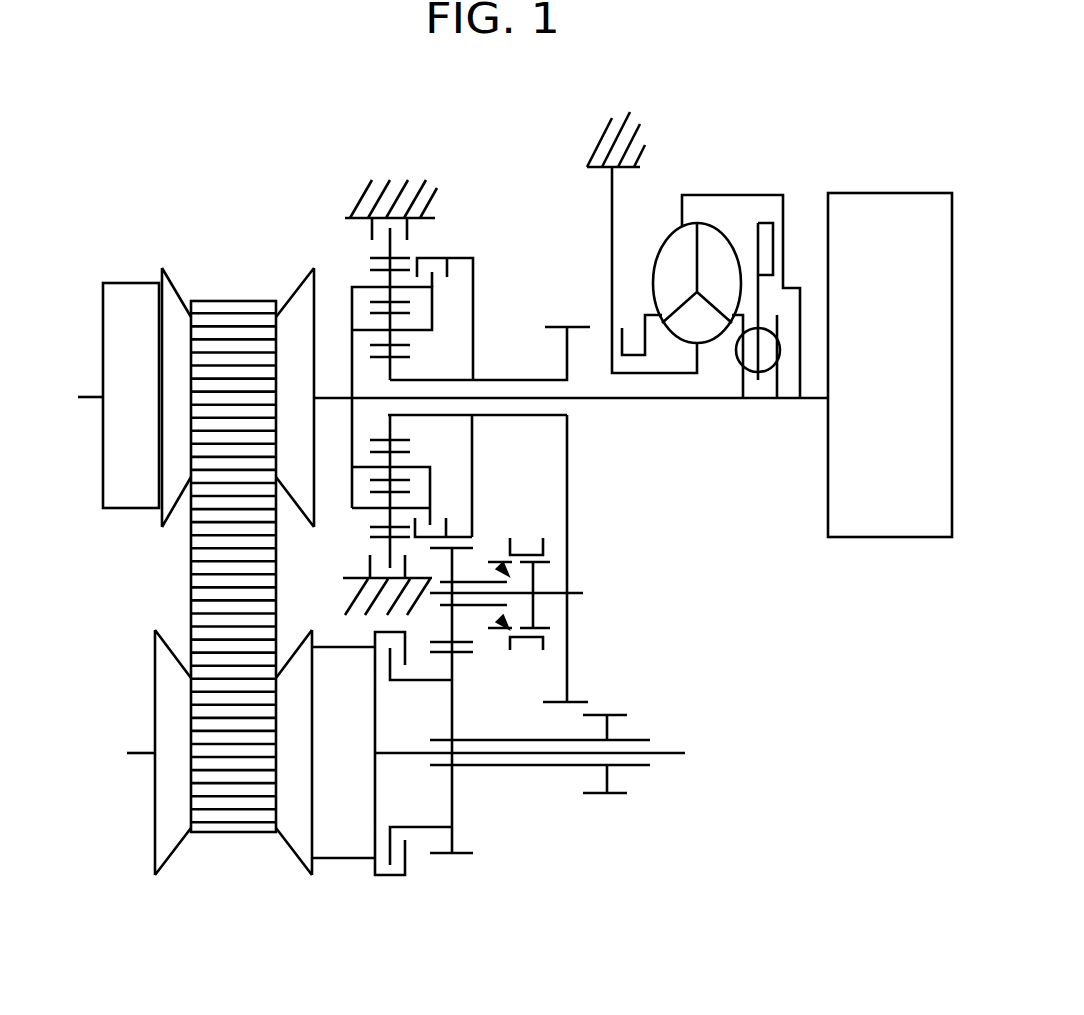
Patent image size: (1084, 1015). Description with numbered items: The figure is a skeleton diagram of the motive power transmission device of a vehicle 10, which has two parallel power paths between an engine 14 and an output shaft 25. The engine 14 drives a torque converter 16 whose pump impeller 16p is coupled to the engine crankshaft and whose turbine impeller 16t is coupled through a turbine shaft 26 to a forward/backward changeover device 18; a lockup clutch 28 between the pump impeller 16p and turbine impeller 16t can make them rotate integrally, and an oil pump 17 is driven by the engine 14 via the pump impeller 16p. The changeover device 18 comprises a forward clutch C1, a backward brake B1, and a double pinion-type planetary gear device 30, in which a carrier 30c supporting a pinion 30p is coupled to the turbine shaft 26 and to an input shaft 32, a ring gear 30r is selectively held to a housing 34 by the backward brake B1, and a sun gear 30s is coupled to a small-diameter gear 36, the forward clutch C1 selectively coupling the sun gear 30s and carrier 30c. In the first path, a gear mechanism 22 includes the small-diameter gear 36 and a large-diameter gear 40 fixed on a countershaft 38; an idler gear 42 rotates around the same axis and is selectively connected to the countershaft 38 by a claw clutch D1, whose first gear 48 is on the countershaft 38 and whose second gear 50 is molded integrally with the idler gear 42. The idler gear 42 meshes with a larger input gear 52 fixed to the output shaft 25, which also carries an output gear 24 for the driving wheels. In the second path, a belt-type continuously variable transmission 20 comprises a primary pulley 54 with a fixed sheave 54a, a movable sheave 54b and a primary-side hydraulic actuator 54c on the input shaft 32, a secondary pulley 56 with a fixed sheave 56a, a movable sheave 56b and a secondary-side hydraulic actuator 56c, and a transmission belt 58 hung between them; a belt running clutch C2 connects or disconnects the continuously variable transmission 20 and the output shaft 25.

The vehicle 10 is at (733, 93).
The engine 14 is at (878, 213).
The torque converter 16 is at (721, 305).
The pump impeller 16p is at (670, 247).
The turbine impeller 16t is at (720, 250).
The oil pump 17 is at (627, 328).
The forward/backward changeover device 18 is at (384, 257).
The belt-type continuously variable transmission 20 is at (210, 538).
The gear mechanism 22 is at (524, 634).
The output gear 24 is at (593, 793).
The output shaft 25 is at (522, 767).
The turbine shaft 26 is at (583, 398).
The lockup clutch 28 is at (767, 247).
The double pinion-type planetary gear device 30 is at (384, 302).
The carrier 30c is at (435, 320).
The pinion 30p is at (380, 273).
The ring gear 30r is at (380, 258).
The sun gear 30s is at (437, 437).
The input shaft 32 is at (337, 403).
The housing 34 is at (390, 198).
The small-diameter gear 36 is at (577, 323).
The countershaft 38 is at (583, 594).
The large-diameter gear 40 is at (563, 705).
The idler gear 42 is at (432, 642).
The first gear 48 is at (542, 636).
The second gear 50 is at (501, 568).
The input gear 52 is at (460, 855).
The primary pulley 54 is at (191, 400).
The fixed sheave 54a is at (292, 497).
The movable sheave 54b is at (172, 300).
The primary-side hydraulic actuator 54c is at (125, 298).
The secondary pulley 56 is at (215, 773).
The fixed sheave 56a is at (168, 698).
The movable sheave 56b is at (293, 828).
The secondary-side hydraulic actuator 56c is at (330, 840).
The transmission belt 58 is at (218, 625).
The backward brake B1 is at (372, 236).
The forward clutch C1 is at (445, 304).
The belt running clutch C2 is at (413, 769).
The claw clutch D1 is at (515, 574).